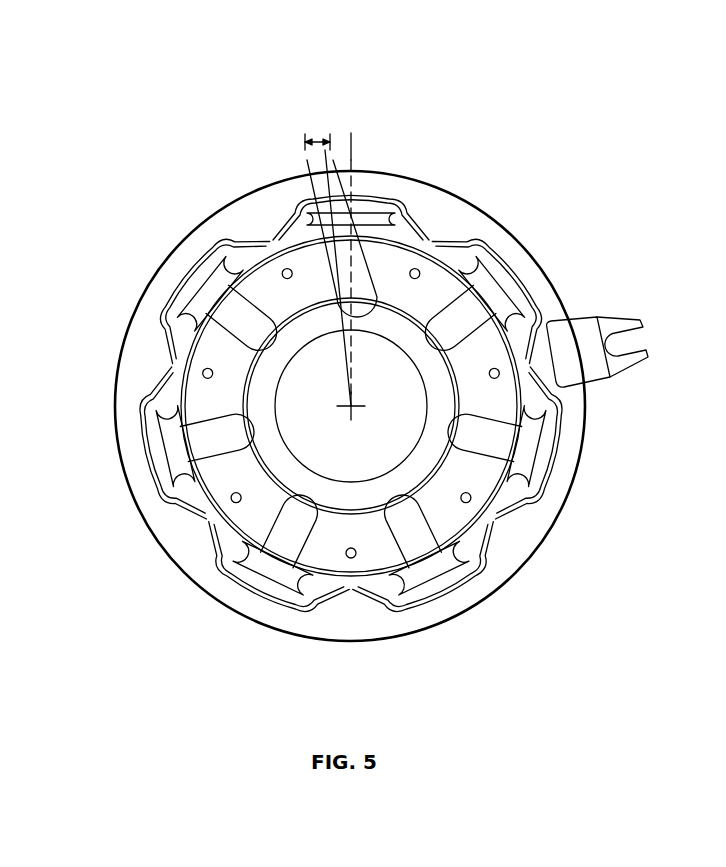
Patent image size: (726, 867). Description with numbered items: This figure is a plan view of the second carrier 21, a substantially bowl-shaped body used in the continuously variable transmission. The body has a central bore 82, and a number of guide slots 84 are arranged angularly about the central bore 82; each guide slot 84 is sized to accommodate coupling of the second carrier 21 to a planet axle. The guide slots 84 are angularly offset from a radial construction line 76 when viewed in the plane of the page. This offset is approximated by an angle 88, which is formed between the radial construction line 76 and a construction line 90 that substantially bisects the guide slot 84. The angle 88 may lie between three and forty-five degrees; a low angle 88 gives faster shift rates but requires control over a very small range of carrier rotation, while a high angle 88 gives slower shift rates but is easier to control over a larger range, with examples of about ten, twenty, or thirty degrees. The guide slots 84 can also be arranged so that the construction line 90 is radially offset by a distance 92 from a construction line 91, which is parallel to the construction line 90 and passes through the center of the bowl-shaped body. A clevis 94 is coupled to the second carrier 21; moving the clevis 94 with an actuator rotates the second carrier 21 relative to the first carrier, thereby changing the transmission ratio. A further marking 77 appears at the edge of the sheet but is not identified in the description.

The second carrier 21 is at (117, 135).
The radial construction line 76 is at (354, 182).
The stator core 77 is at (249, 386).
The central bore 82 is at (202, 490).
The guide slot 84 is at (383, 295).
The angle 88 is at (342, 136).
The construction line 90 is at (430, 256).
The construction line 91 is at (306, 150).
The distance 92 is at (314, 136).
The clevis 94 is at (632, 376).